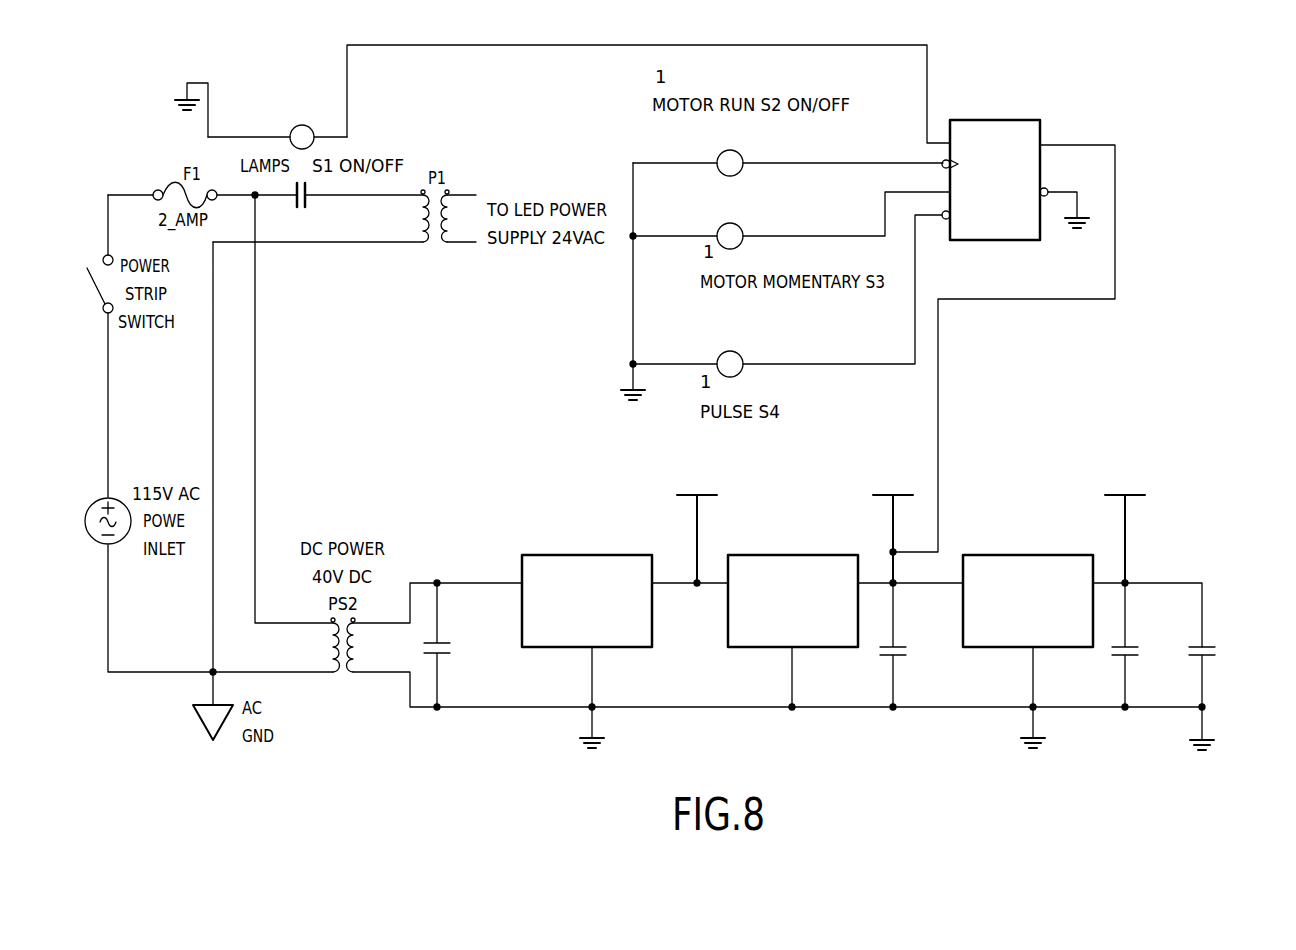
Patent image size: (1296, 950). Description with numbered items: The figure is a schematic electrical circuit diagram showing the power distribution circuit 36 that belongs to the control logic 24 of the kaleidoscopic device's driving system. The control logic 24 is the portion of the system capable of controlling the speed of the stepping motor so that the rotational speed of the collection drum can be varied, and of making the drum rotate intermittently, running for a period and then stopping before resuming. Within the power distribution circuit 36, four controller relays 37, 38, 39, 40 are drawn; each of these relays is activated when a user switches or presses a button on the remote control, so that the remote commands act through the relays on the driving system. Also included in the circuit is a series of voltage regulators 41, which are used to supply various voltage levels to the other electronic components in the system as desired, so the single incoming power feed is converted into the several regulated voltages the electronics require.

The control logic 24 is at (540, 768).
The power distribution circuit 36 is at (1178, 108).
The controller relay 37 is at (292, 126).
The controller relay 38 is at (720, 155).
The controller relay 39 is at (720, 228).
The controller relay 40 is at (718, 355).
The voltage regulators 41 is at (908, 735).